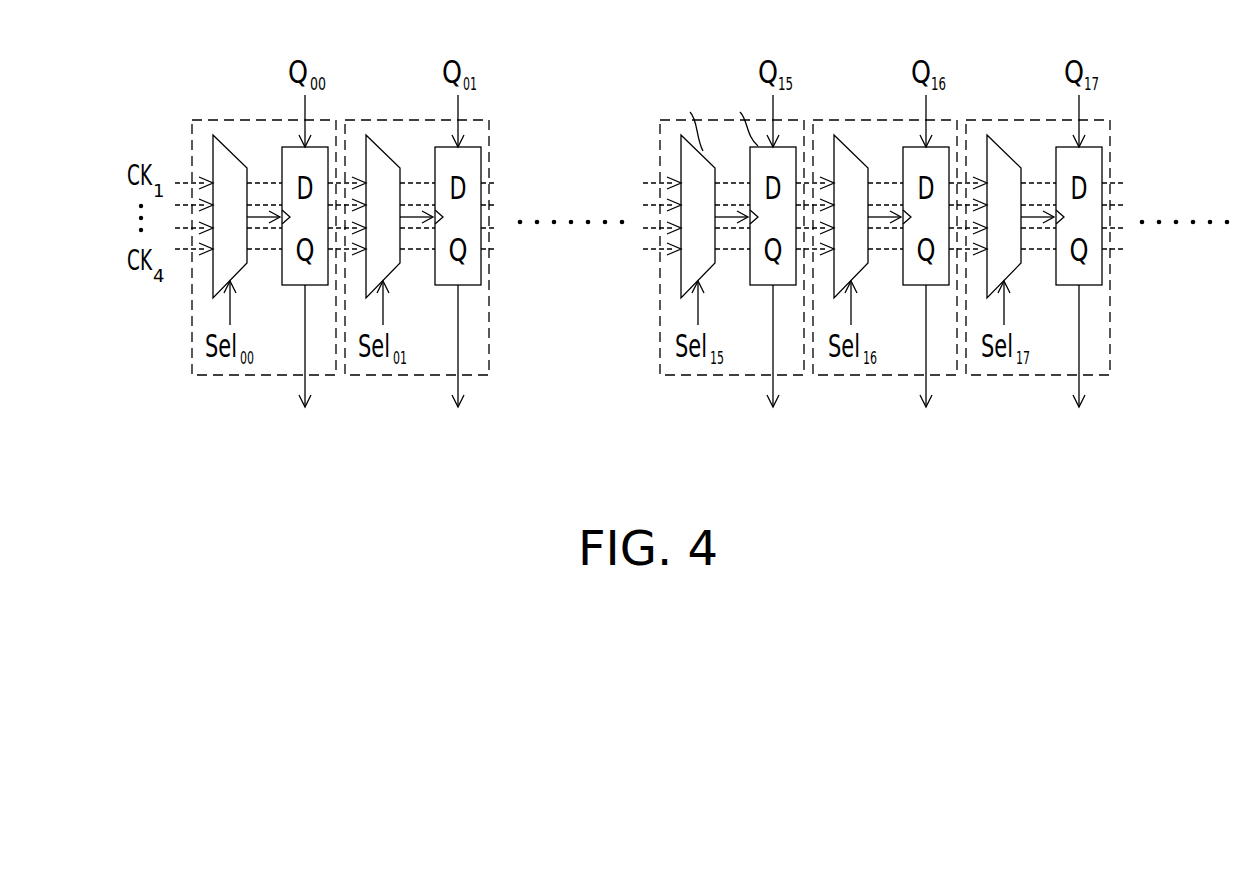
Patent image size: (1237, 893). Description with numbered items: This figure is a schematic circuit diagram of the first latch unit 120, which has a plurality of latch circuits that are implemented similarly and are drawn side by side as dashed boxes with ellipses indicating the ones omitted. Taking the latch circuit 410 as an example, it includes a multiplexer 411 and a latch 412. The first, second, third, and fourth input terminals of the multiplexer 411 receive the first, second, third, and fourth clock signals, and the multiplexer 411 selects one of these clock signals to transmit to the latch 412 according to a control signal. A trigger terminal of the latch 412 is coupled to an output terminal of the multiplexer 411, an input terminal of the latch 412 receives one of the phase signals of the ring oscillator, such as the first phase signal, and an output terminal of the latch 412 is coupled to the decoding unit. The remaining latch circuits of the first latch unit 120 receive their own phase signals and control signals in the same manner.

The latch circuit 410 is at (254, 251).
The multiplexer 411 is at (233, 151).
The latch 412 is at (289, 146).
The first latch unit 120 is at (1228, 489).